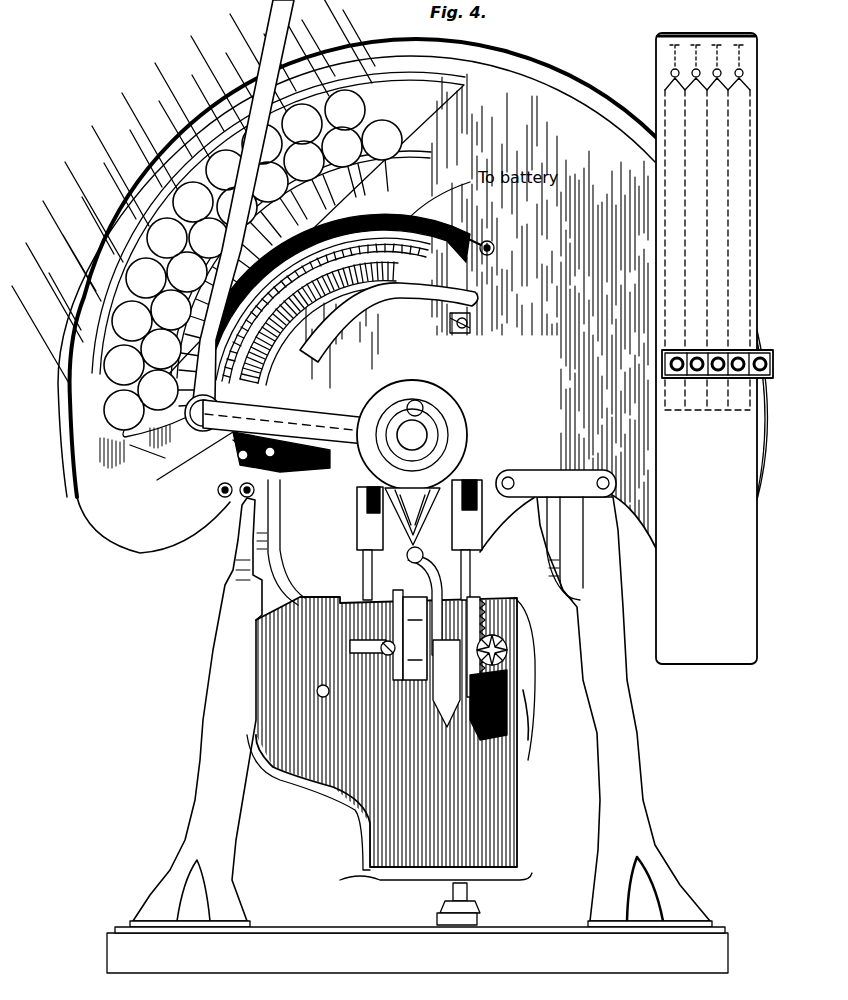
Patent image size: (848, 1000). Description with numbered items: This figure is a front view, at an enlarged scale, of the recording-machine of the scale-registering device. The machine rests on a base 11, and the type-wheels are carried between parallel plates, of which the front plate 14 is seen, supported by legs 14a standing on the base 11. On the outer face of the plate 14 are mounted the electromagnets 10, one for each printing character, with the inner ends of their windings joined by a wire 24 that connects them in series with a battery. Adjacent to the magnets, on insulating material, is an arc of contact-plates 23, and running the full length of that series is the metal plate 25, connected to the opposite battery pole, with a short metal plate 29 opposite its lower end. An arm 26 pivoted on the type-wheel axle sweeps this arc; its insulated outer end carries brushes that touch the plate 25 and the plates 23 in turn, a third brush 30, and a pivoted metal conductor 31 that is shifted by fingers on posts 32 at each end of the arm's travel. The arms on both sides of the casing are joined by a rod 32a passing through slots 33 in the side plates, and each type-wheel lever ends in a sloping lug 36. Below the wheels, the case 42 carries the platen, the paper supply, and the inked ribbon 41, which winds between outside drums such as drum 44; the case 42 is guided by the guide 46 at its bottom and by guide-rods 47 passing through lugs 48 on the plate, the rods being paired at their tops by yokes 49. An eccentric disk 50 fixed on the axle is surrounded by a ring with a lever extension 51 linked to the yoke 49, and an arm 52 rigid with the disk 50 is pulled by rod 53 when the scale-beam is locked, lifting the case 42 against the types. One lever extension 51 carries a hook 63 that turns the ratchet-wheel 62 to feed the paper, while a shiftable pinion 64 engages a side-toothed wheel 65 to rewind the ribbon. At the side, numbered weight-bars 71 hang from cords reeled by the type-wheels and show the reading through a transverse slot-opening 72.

The electromagnets 10 is at (278, 254).
The base 11 is at (417, 950).
The plate 14 is at (390, 279).
The legs 14a is at (421, 698).
The contact-plate 23 is at (342, 305).
The wire 24 is at (148, 458).
The metal plate 25 is at (393, 223).
The arm 26 is at (287, 452).
The metal plate 29 is at (240, 445).
The brush 30 is at (195, 462).
The metal conductor 31 is at (311, 465).
The posts 32 is at (236, 518).
The rod 32a is at (304, 424).
The slots 33 is at (477, 305).
The lug 36 is at (282, 410).
The inked ribbon 41 is at (410, 635).
The case 42 is at (500, 804).
The drum 44 is at (405, 678).
The guide 46 is at (458, 904).
The guide-rods 47 is at (363, 573).
The lugs 48 is at (356, 540).
The yokes 49 is at (422, 641).
The eccentric disk 50 is at (468, 420).
The lever extension 51 is at (412, 525).
The arm 52 is at (392, 425).
The rod 53 is at (296, 8).
The ratchet-wheel 62 is at (500, 645).
The hook 63 is at (500, 640).
The pinion 64 is at (520, 672).
The wheel 65 is at (520, 705).
The weight-bars 71 is at (738, 238).
The slot-opening 72 is at (773, 364).